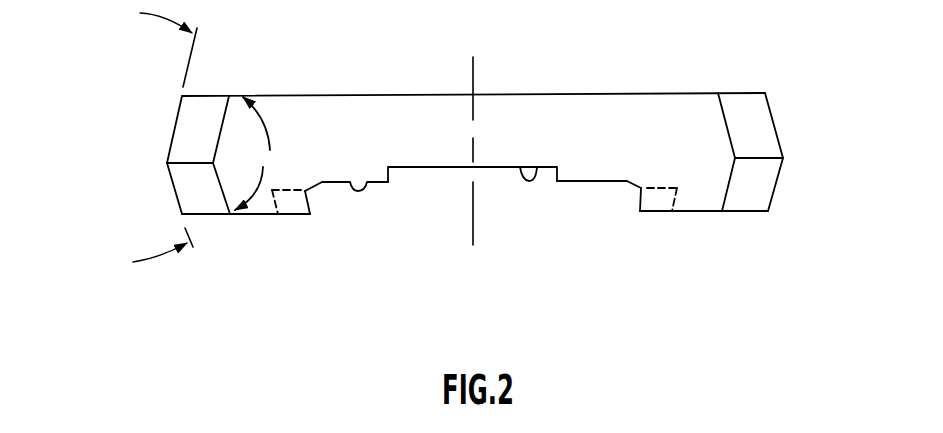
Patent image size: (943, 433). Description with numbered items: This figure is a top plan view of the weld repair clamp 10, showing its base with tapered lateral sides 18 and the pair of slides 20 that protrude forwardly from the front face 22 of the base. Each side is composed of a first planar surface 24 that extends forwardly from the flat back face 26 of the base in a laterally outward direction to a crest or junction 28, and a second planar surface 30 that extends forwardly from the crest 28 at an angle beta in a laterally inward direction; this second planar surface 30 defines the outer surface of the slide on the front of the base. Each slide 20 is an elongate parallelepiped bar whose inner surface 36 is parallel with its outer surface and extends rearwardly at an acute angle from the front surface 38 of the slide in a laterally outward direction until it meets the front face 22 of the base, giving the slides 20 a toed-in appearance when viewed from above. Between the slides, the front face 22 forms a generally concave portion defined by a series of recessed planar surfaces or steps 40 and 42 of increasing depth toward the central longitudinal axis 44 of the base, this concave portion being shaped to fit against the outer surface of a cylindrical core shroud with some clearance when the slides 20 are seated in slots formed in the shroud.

The weld repair clamp 10 is at (135, 72).
The tapered lateral surfaces or sides 18 is at (165, 140).
The slide members or slides 20 is at (290, 223).
The front surface or face of the base 22 is at (580, 190).
The first planar side surface 24 is at (178, 111).
The flat back surface or face of the base 26 is at (687, 93).
The crest or junction 28 is at (167, 163).
The second planar side surface 30 is at (170, 190).
The inner surface of the slide 36 is at (308, 205).
The front surface of the slide 38 is at (248, 217).
The recessed planar surface or step 40 is at (350, 187).
The recessed planar surface or step 42 is at (535, 180).
The central longitudinal axis of the base 44 is at (472, 83).